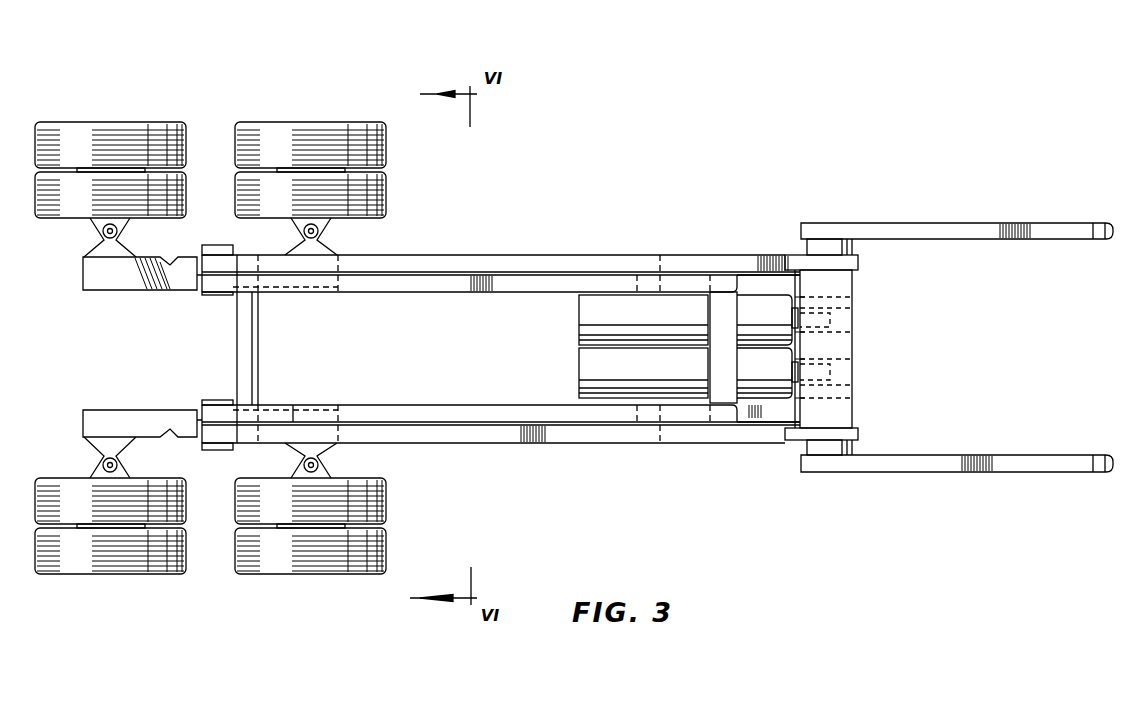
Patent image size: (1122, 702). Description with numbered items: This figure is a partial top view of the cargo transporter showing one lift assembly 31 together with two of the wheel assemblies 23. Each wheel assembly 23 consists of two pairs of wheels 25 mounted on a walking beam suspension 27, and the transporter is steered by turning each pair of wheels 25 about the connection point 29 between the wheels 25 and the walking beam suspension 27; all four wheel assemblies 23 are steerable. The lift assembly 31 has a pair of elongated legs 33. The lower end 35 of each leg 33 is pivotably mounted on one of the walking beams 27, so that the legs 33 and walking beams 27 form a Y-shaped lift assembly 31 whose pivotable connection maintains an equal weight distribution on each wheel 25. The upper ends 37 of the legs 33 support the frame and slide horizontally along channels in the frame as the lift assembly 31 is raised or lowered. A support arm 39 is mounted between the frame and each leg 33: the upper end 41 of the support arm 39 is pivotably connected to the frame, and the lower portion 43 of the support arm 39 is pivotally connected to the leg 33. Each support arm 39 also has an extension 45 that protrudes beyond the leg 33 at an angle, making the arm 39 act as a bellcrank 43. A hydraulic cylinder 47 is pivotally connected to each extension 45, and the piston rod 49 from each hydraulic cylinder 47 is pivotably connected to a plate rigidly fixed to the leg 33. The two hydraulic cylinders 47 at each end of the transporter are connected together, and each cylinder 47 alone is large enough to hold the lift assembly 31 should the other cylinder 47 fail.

The wheel assembly 23 is at (210, 118).
The wheels 25 is at (112, 130).
The walking beam suspension 27 is at (117, 278).
The connection point 29 is at (100, 235).
The lift assembly 31 is at (662, 240).
The elongated legs 33 is at (559, 262).
The lower end 35 is at (213, 268).
The upper ends 37 is at (985, 230).
The support arm 39 is at (511, 282).
The upper end 41 is at (646, 283).
The lower portion 43 is at (214, 286).
The extension 45 is at (723, 280).
The hydraulic cylinder 47 is at (678, 310).
The piston rod 49 is at (795, 318).